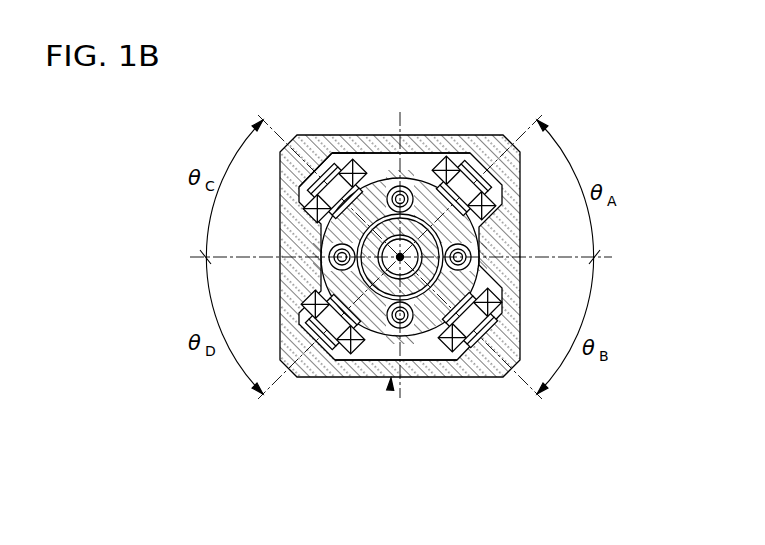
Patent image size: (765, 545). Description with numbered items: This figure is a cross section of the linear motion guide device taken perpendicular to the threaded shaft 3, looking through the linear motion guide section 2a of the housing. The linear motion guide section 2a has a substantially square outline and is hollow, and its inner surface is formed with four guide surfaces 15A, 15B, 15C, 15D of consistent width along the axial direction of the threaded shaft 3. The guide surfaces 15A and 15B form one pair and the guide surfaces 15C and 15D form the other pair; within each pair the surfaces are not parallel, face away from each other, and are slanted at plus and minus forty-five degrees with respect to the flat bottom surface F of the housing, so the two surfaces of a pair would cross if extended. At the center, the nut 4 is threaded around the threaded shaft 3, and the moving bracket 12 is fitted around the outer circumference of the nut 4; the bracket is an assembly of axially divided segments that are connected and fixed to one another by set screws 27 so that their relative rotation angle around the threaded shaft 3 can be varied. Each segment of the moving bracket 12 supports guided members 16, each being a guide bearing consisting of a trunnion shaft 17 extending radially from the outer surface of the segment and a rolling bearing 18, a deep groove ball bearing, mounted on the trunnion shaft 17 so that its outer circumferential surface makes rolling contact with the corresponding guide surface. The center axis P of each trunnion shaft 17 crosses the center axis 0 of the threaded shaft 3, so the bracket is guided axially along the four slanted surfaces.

The linear motion guide section 2a is at (454, 141).
The threaded shaft 3 is at (372, 362).
The nut 4 is at (432, 362).
The moving bracket 12 is at (421, 181).
The guide surface 15A is at (482, 197).
The guide surface 15B is at (486, 322).
The guide surface 15C is at (320, 197).
The guide surface 15D is at (318, 318).
The guided member 16 is at (368, 81).
The trunnion shaft 17 is at (330, 152).
The rolling bearing 18 is at (350, 152).
The set screw 27 is at (389, 185).
The center axis 0 is at (478, 238).
The center axis P is at (546, 121).
The flat bottom surface F is at (390, 390).